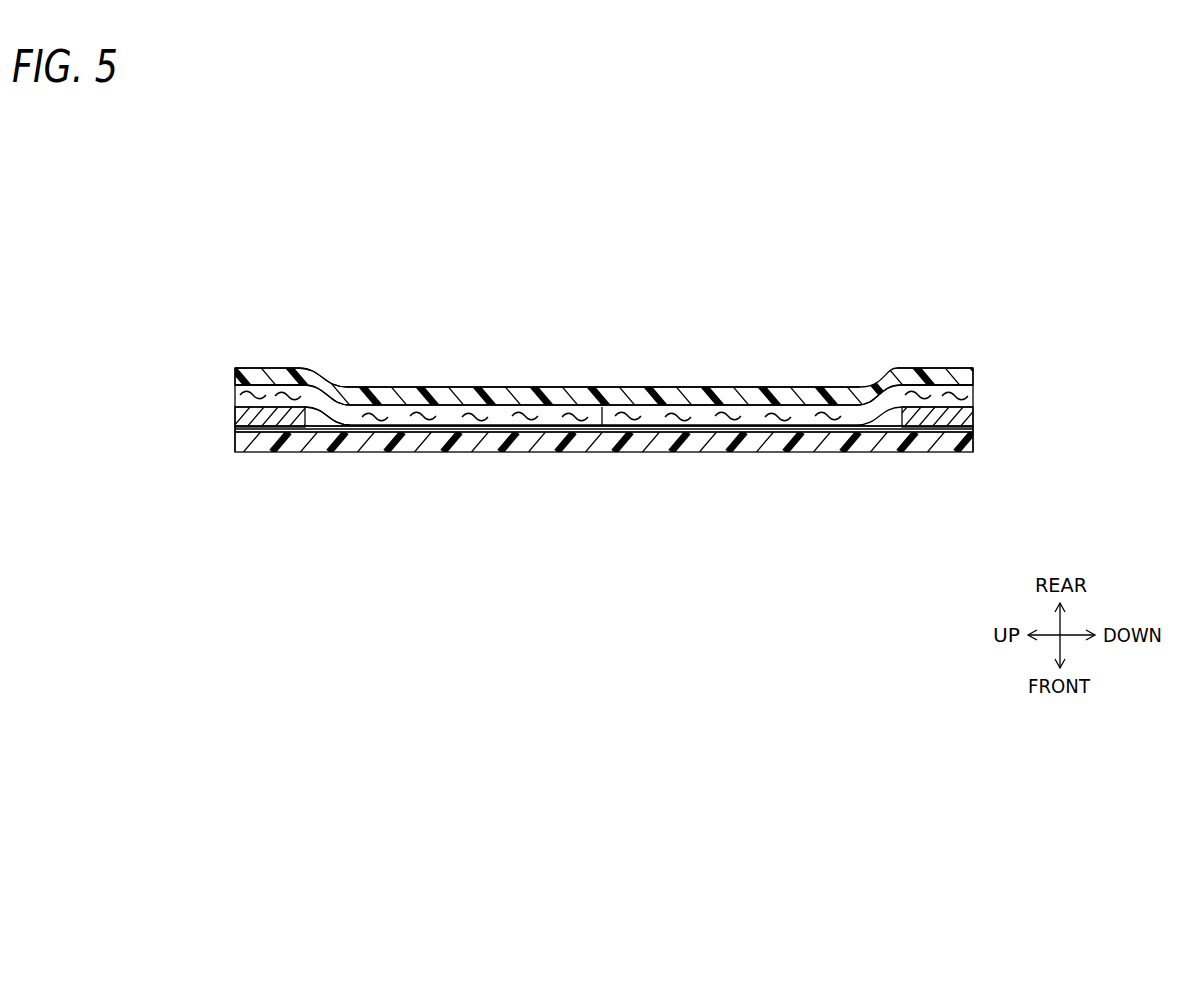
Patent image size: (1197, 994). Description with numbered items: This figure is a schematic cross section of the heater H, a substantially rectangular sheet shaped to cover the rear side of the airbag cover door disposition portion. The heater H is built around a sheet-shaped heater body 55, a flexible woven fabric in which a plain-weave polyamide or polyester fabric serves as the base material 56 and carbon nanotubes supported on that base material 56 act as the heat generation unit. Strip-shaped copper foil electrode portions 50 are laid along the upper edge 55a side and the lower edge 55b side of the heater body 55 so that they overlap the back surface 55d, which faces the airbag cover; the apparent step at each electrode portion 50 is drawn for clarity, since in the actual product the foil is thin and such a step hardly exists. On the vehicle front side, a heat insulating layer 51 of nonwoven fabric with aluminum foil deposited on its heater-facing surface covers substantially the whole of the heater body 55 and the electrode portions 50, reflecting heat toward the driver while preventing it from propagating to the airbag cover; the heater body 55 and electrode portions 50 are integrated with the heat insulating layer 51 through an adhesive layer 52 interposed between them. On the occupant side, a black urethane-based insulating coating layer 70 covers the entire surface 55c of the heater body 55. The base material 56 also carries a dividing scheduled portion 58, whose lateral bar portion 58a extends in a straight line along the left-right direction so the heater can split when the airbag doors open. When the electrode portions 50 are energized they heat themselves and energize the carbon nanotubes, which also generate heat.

The electrode portion 50 is at (263, 407).
The heat insulating layer 51 is at (633, 447).
The adhesive layer 52 is at (383, 422).
The heater body 55 is at (975, 396).
The upper edge 55a is at (265, 393).
The lower edge 55b is at (945, 392).
The surface 55c is at (348, 403).
The back surface 55d is at (332, 409).
The base material 56 is at (604, 395).
The dividing scheduled portion 58 is at (604, 429).
The lateral bar portion 58a is at (600, 428).
The coating layer 70 is at (774, 387).
The heater H is at (998, 272).